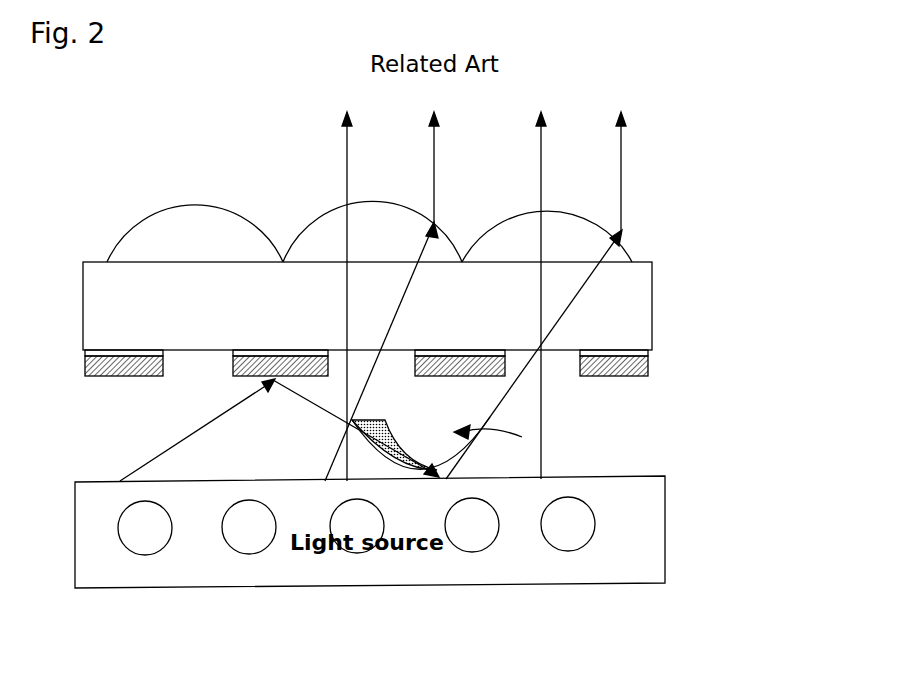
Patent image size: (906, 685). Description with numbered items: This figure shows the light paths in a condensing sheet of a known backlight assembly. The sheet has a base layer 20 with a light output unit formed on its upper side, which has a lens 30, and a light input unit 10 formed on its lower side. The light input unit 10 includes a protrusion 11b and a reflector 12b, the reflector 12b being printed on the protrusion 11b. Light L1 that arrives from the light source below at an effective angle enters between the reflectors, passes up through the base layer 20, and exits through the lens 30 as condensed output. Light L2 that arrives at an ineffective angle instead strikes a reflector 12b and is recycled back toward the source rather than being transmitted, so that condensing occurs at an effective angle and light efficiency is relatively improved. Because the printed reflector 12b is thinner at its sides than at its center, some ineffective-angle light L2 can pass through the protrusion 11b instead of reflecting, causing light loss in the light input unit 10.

The lens 30 is at (409, 228).
The base layer 20 is at (403, 306).
The protrusion 11b is at (412, 339).
The reflector 12b is at (412, 382).
The light input unit 10 is at (446, 366).
The light incident at an effective angle L1 is at (473, 351).
The light incident at an ineffective angle L2 is at (259, 430).